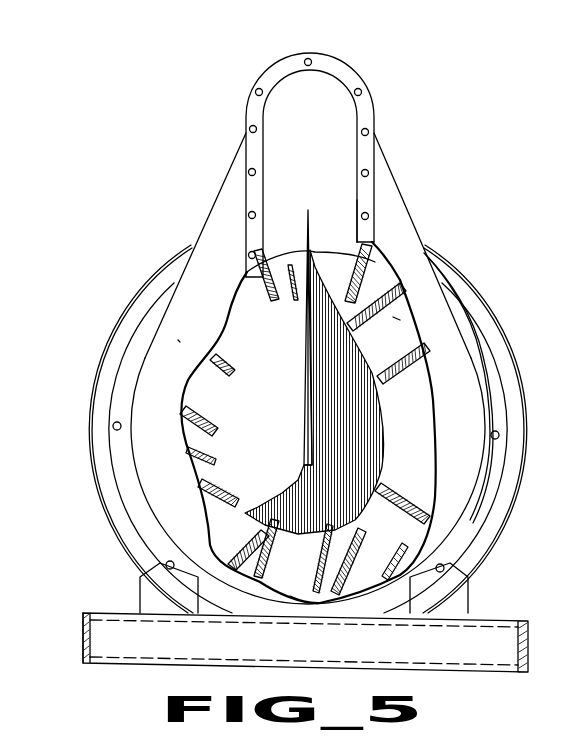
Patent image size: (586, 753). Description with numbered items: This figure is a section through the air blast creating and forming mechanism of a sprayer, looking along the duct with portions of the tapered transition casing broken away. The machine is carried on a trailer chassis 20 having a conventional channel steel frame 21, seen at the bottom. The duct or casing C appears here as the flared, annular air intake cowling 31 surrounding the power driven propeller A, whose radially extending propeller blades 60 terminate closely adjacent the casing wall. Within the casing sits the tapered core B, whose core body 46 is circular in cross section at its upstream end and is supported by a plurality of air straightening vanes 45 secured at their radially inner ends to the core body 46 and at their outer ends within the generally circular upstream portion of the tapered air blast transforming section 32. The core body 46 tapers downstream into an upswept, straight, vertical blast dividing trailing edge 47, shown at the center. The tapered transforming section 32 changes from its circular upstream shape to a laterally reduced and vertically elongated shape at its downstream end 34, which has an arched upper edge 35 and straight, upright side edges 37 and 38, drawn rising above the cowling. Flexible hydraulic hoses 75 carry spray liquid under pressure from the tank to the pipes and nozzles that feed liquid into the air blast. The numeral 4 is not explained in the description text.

The arched upper edge 35 is at (320, 72).
The downstream end 34 is at (253, 105).
The upright side edge 37 is at (262, 193).
The tapered air blast transforming section 32 is at (387, 200).
The upright side edge 38 is at (357, 208).
The flared annular air intake cowling 31 is at (100, 418).
The air straightening vanes 45 is at (424, 254).
The core body 46 is at (433, 383).
The blast dividing trailing edge 47 is at (303, 387).
The propeller blades 60 is at (322, 262).
The trailer chassis 20 is at (487, 670).
The channel steel frame 21 is at (87, 664).
The spoke 4 is at (278, 595).
The flexible hydraulic hoses 75 is at (18, 549).
The propeller A is at (393, 317).
The tapered core B is at (255, 423).
The casing C is at (178, 340).